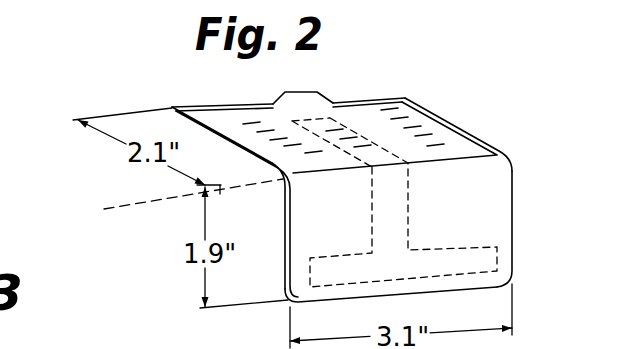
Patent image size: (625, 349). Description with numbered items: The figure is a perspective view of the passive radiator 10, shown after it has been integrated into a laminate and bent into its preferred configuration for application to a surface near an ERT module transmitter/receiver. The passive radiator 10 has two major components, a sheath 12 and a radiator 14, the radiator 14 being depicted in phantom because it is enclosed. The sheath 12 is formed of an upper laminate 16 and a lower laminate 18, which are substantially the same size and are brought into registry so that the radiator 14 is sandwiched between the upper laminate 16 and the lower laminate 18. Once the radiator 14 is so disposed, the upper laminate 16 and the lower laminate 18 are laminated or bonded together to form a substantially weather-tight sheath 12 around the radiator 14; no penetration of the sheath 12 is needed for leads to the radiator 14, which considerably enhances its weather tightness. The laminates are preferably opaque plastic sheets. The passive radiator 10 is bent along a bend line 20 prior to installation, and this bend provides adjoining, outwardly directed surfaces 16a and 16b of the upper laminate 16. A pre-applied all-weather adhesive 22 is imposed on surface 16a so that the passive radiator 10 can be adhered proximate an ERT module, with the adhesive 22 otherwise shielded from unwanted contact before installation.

The passive radiator 10 is at (153, 79).
The sheath 12 is at (366, 99).
The radiator 14 is at (320, 301).
The upper laminate 16 is at (285, 220).
The outwardly directed surface 16a is at (442, 118).
The outwardly directed surface 16b is at (497, 218).
The lower laminate 18 is at (237, 147).
The bend line 20 is at (176, 201).
The all-weather adhesive 22 is at (398, 112).